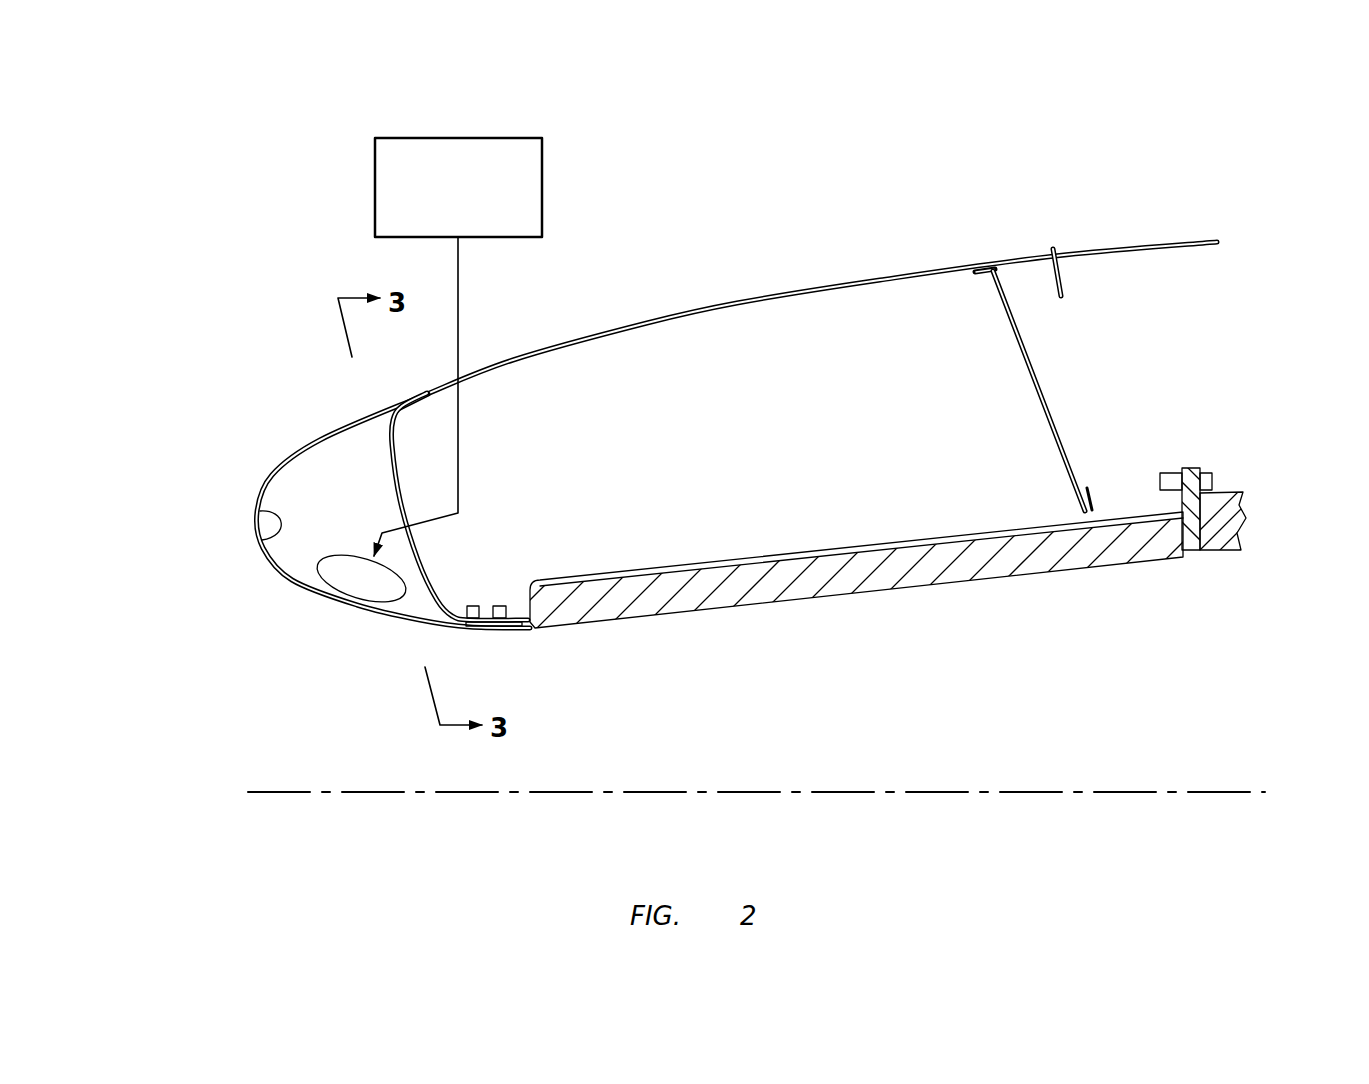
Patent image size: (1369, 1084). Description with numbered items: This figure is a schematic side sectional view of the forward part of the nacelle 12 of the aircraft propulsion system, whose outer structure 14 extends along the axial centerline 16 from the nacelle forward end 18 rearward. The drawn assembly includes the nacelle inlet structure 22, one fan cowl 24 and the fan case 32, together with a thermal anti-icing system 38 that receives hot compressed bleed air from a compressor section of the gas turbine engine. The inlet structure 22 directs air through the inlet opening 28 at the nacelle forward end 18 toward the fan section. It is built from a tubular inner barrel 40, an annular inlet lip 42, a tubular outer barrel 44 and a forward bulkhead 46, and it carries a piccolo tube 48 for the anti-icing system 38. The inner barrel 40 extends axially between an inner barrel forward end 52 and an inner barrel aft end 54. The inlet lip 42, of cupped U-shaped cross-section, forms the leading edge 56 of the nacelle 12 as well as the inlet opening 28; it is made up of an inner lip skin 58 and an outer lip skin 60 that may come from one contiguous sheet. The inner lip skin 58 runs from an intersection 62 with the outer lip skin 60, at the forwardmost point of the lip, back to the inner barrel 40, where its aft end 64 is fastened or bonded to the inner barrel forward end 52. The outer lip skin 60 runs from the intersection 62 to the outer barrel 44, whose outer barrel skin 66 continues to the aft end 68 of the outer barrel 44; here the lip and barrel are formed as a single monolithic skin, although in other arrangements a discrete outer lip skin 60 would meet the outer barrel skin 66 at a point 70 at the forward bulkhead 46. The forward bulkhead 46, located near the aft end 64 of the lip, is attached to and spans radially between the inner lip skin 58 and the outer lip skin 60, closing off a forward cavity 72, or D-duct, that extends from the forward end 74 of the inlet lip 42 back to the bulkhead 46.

The nacelle 12 is at (238, 212).
The outer structure 14 is at (286, 248).
The axial centerline 16 is at (1255, 803).
The nacelle forward end 18 is at (165, 518).
The nacelle inlet structure 22 is at (826, 264).
The fan cowl 24 is at (1145, 217).
The inlet opening 28 is at (276, 697).
The fan case 32 is at (1246, 528).
The thermal anti-icing system 38 is at (543, 163).
The inner barrel 40 is at (770, 612).
The inlet lip 42 is at (289, 578).
The outer barrel 44 is at (643, 322).
The forward bulkhead 46 is at (431, 561).
The piccolo tube 48 is at (357, 612).
The inner barrel forward end 52 is at (488, 628).
The inner barrel aft end 54 is at (1200, 553).
The leading edge 56 is at (165, 518).
The inner lip skin 58 is at (398, 626).
The outer lip skin 60 is at (305, 443).
The intersection 62 is at (257, 507).
The aft end of the inner lip skin 64 is at (528, 630).
The outer barrel skin 66 is at (737, 304).
The aft end of the outer barrel 68 is at (1054, 252).
The point 70 is at (412, 392).
The forward cavity 72 is at (348, 508).
The forward end of the inlet lip 74 is at (268, 545).